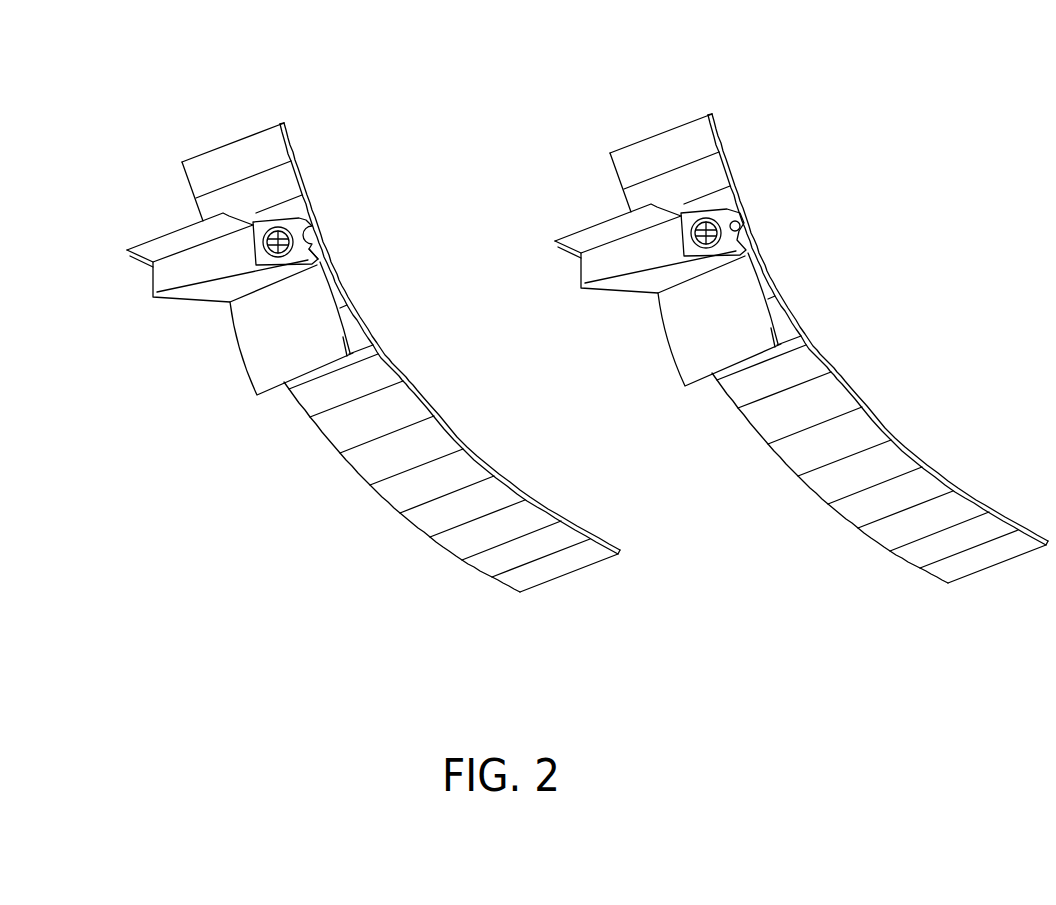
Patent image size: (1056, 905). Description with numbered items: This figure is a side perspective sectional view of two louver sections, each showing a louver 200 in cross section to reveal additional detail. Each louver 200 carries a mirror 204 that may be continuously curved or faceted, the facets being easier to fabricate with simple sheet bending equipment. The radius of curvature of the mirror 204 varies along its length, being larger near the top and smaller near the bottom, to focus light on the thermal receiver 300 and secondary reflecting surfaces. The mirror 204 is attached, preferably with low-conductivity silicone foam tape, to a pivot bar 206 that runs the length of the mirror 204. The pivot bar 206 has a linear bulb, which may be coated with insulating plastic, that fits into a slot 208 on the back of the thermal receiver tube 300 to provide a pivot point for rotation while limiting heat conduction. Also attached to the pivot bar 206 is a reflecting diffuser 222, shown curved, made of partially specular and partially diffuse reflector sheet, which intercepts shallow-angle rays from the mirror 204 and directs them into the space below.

The louver 200 is at (303, 108).
The mirror 204 is at (520, 491).
The pivot bar 206 is at (313, 233).
The slot 208 is at (313, 240).
The reflecting diffuser 222 is at (260, 364).
The thermal receiver tube 300 is at (162, 283).